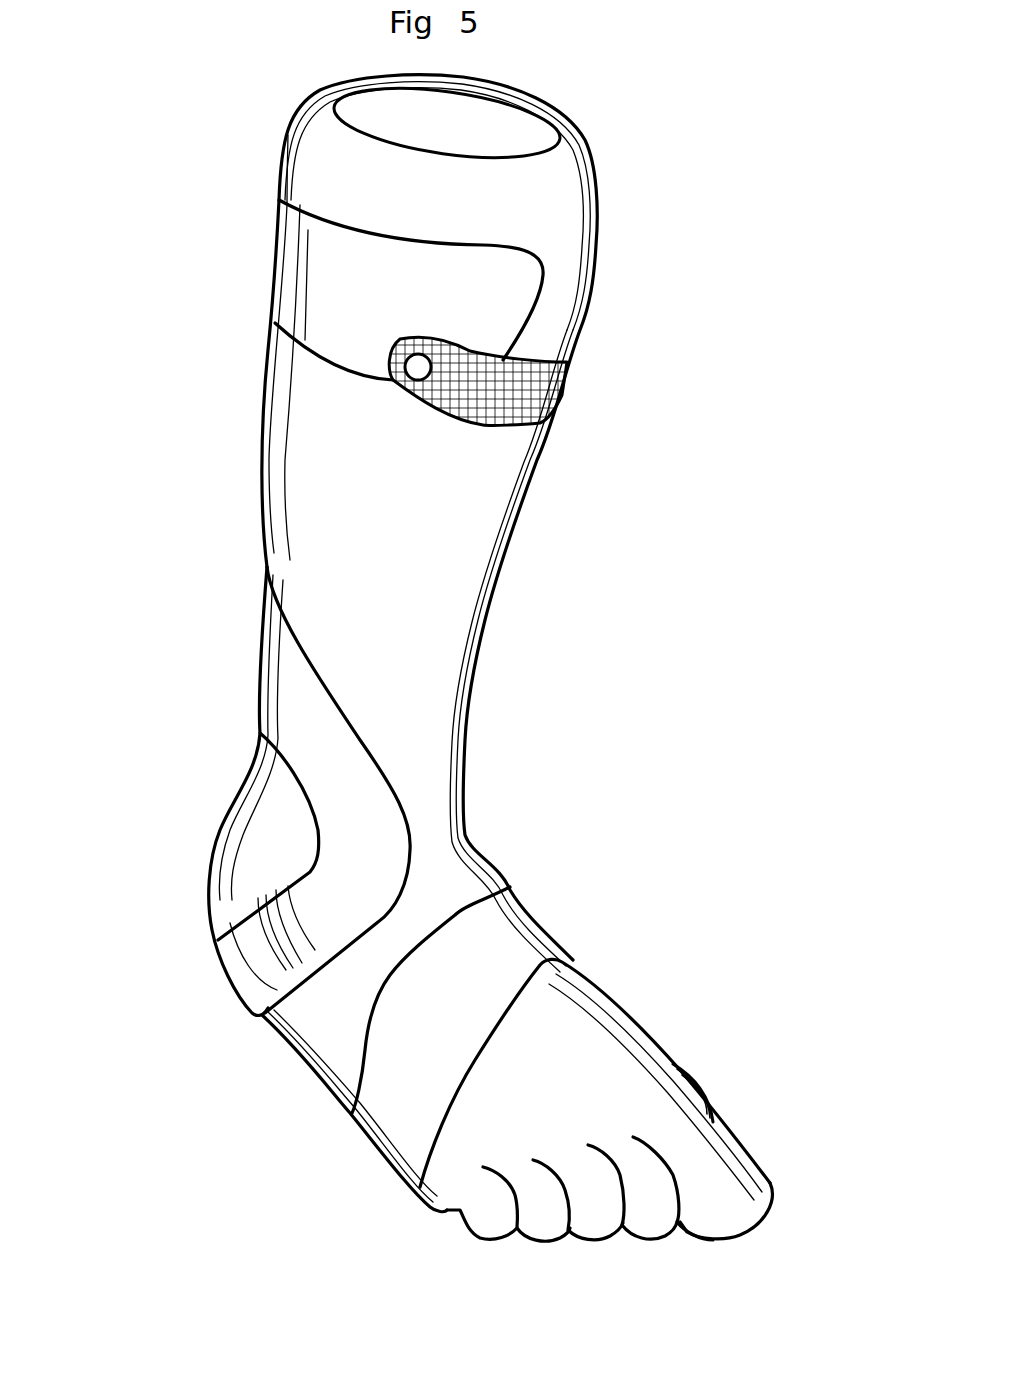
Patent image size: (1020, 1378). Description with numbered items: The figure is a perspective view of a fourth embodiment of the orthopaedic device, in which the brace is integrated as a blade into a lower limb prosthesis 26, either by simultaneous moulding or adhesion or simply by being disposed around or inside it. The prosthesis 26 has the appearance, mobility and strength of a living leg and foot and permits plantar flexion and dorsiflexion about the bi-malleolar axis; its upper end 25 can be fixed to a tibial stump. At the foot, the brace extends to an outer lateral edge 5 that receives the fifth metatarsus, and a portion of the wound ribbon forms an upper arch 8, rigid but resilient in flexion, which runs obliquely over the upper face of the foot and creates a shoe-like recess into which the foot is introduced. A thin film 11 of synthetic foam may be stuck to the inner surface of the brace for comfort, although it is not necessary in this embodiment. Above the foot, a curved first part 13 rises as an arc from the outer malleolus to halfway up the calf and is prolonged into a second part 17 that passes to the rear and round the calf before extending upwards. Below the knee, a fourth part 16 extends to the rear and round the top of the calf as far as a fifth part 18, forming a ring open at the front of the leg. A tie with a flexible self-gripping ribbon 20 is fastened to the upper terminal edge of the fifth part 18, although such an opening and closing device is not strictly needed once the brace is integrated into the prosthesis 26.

The outer lateral edge 5 is at (385, 1170).
The upper arch 8 is at (393, 1052).
The thin film 11 is at (716, 1093).
The curved first part 13 is at (327, 871).
The fourth part 16 is at (247, 222).
The second part 17 is at (235, 593).
The fifth part 18 is at (505, 288).
The flexible self-gripping ribbon 20 is at (542, 392).
The upper end 25 is at (390, 112).
The prosthesis 26 is at (489, 681).